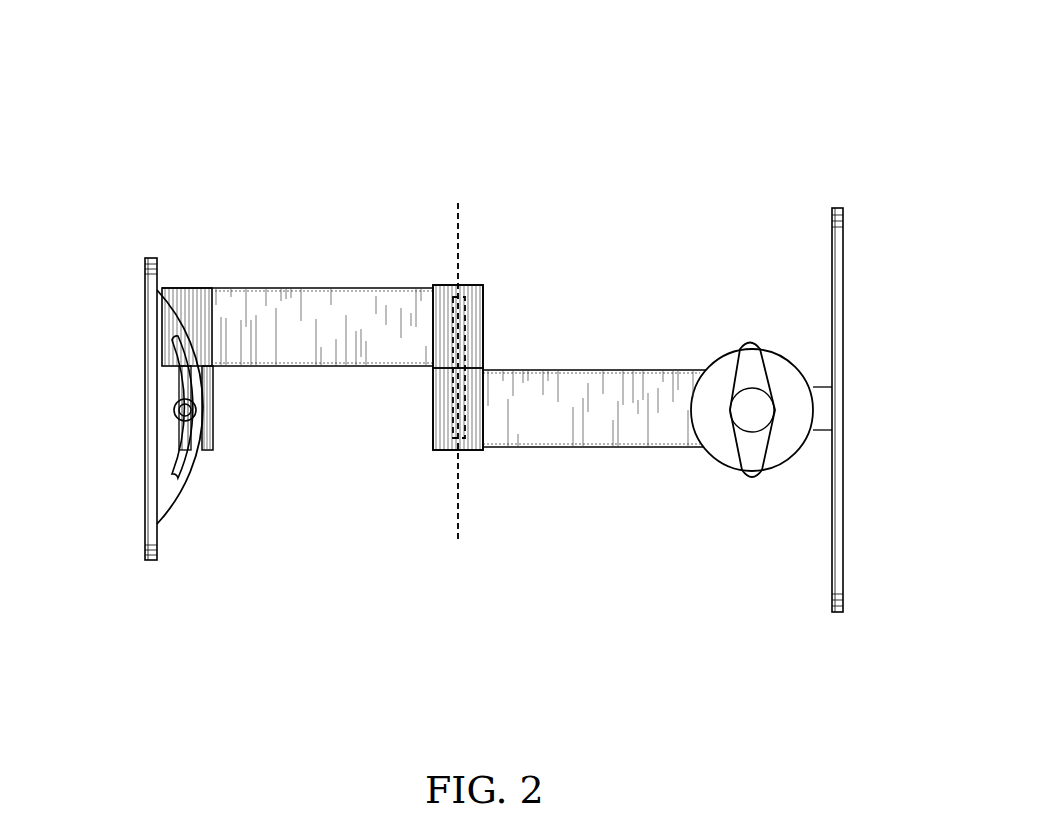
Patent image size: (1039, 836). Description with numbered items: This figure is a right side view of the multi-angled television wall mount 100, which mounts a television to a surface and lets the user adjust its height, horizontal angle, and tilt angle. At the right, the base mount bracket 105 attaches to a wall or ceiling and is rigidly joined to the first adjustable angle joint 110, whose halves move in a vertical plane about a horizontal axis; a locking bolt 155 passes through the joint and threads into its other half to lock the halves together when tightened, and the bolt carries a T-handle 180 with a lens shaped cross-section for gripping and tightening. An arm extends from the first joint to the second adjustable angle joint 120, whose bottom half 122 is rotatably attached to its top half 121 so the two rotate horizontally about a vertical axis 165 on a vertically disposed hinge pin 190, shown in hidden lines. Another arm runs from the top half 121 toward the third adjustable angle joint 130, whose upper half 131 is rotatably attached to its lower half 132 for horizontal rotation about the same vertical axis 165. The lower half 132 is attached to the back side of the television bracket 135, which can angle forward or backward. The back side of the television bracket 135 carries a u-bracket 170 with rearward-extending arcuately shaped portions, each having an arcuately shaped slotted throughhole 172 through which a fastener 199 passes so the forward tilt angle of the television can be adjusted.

The multi-angled television wall mount 100 is at (673, 53).
The base mount bracket 105 is at (835, 207).
The first adjustable angle joint 110 is at (713, 460).
The second adjustable angle joint 120 is at (471, 278).
The top half 121 is at (484, 340).
The bottom half 122 is at (433, 415).
The third adjustable angle joint 130 is at (195, 315).
The upper half 131 is at (193, 305).
The lower half 132 is at (213, 405).
The television bracket 135 is at (150, 326).
The locking bolt 155 is at (750, 408).
The vertical axis 165 is at (456, 225).
The u-bracket 170 is at (165, 374).
The arcuately shaped slotted throughhole 172 is at (193, 463).
The T-handle 180 is at (752, 355).
The hinge pin 190 is at (462, 315).
The fastener 199 is at (195, 433).